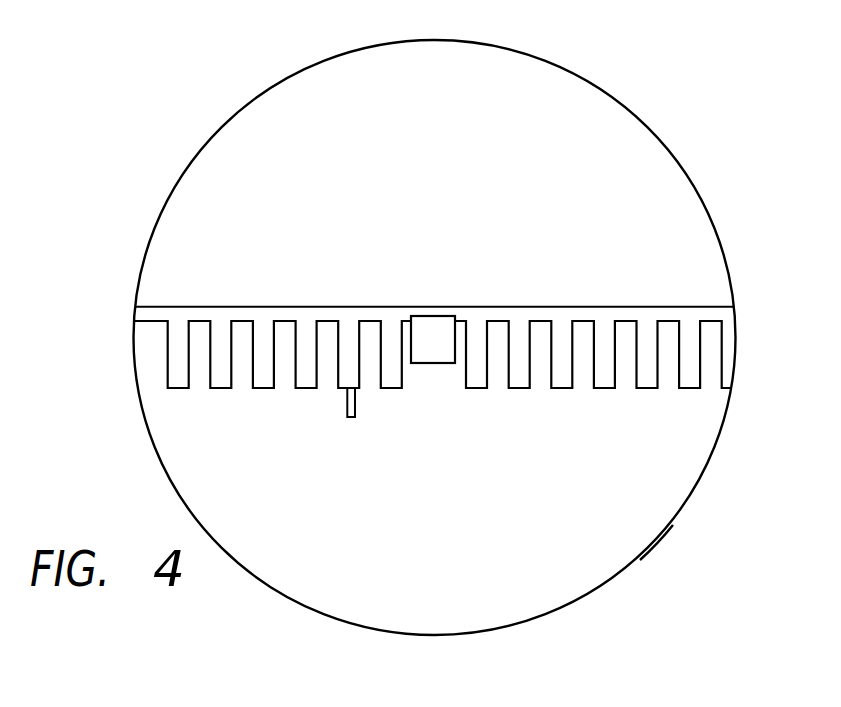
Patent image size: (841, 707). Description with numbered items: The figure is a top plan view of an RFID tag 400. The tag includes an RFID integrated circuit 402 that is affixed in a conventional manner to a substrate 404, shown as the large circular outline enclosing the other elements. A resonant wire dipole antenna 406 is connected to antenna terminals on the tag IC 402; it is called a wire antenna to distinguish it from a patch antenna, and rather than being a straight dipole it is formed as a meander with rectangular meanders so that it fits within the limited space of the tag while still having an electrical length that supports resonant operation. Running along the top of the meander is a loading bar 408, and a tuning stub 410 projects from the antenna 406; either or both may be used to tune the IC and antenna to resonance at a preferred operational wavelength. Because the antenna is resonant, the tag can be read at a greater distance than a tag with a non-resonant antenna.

The RFID tag 400 is at (196, 111).
The RFID integrated circuit (IC) 402 is at (431, 363).
The substrate 404 is at (673, 525).
The resonant wire dipole antenna 406 is at (562, 388).
The loading bar 408 is at (435, 306).
The tuning stub 410 is at (351, 417).